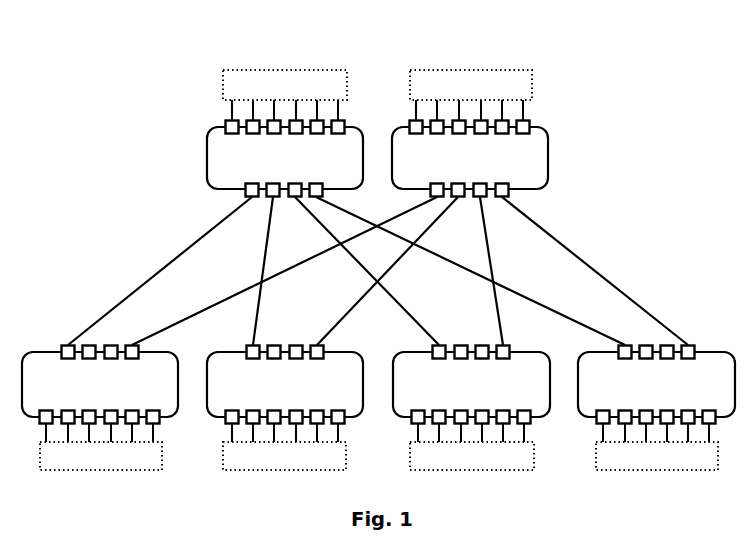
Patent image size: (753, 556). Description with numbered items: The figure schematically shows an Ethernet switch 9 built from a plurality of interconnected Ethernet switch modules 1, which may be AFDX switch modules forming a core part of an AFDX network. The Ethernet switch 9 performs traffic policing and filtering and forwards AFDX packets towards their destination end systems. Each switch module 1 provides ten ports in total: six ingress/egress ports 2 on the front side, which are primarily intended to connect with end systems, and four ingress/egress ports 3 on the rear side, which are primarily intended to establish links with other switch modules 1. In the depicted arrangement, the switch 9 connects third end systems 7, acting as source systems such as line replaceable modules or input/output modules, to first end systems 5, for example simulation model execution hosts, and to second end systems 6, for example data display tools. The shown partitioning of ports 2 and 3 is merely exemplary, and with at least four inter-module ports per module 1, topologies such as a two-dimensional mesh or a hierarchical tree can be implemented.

The Ethernet switch module 1 is at (206, 158).
The ingress/egress port 2 is at (732, 433).
The ingress/egress port 3 is at (246, 197).
The first end systems 5 is at (200, 58).
The second end systems 6 is at (397, 63).
The third end systems 7 is at (163, 464).
The Ethernet switch 9 is at (93, 73).